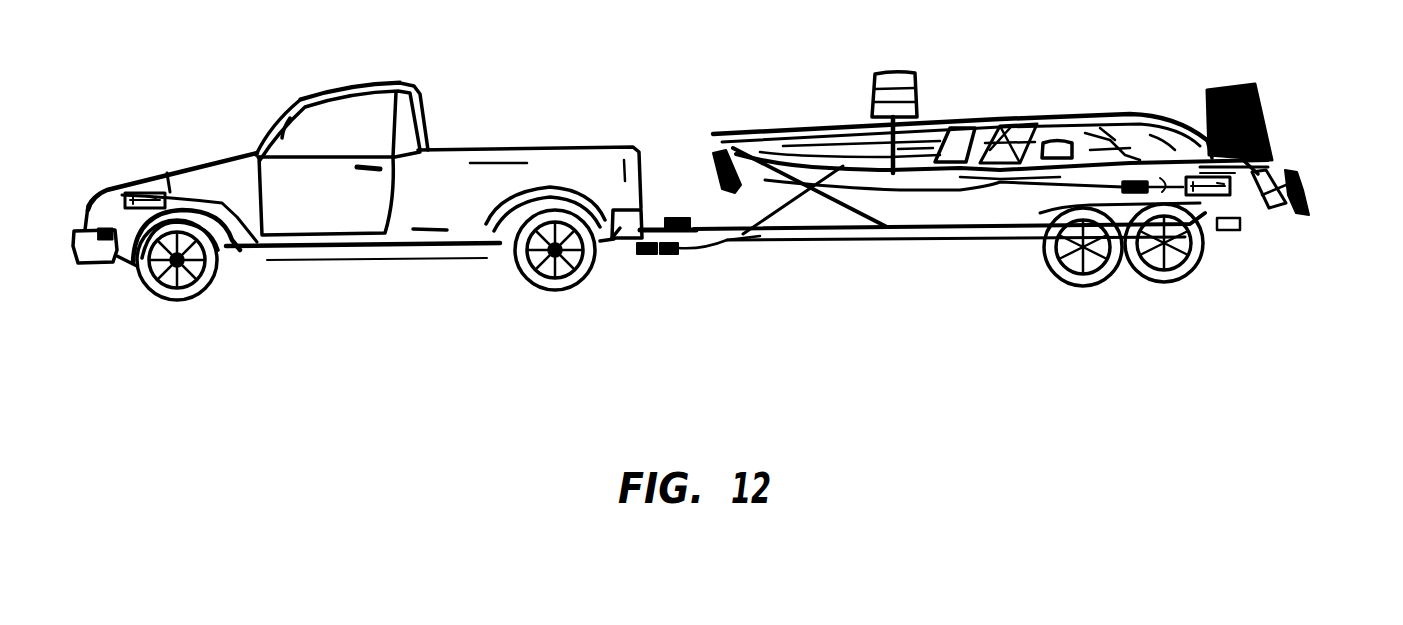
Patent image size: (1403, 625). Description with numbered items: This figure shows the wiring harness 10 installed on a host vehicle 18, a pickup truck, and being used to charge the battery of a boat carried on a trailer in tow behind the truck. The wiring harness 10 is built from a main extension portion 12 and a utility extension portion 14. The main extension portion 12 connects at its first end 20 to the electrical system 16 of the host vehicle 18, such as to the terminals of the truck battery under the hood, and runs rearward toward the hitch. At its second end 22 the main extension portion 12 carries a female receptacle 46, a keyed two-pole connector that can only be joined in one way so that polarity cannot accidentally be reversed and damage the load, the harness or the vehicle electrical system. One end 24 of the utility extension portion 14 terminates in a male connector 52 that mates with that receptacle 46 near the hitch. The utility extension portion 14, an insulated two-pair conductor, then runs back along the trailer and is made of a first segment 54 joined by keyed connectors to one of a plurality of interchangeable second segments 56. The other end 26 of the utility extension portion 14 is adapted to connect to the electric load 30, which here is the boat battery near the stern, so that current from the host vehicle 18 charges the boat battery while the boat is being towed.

The wiring harness 10 is at (652, 76).
The main extension portion 12 is at (420, 298).
The utility extension portion 14 is at (768, 200).
The electrical system 16 is at (149, 193).
The host vehicle 18 is at (338, 88).
The first end 20 is at (170, 182).
The second end 22 is at (644, 268).
The one end 24 is at (689, 268).
The other end 26 is at (1210, 217).
The electric load 30 is at (1230, 205).
The female receptacle 46 is at (637, 257).
The male connector 52 is at (667, 256).
The first segment 54 is at (985, 203).
The interchangeable second segments 56 is at (1143, 240).